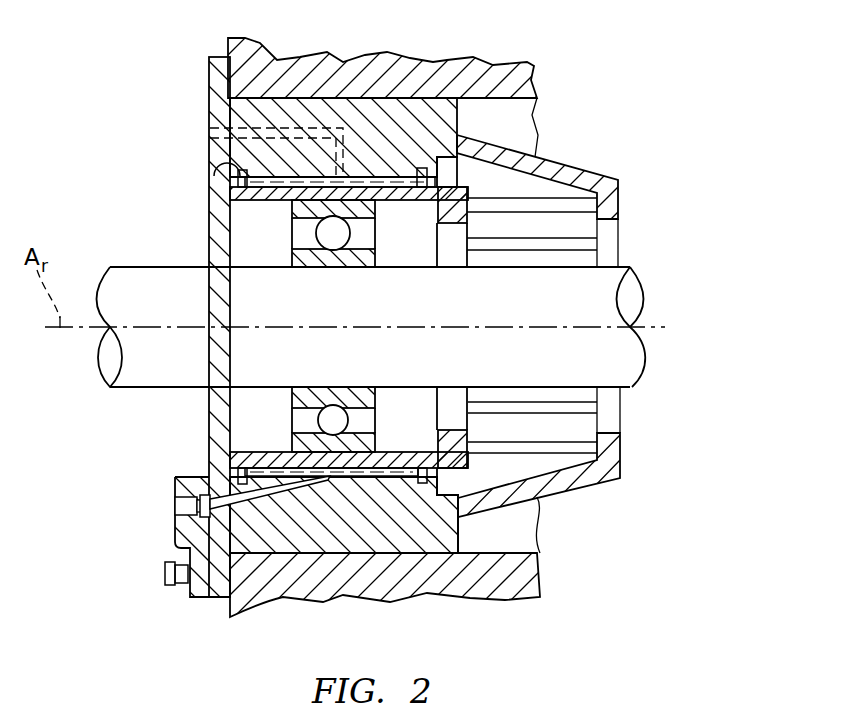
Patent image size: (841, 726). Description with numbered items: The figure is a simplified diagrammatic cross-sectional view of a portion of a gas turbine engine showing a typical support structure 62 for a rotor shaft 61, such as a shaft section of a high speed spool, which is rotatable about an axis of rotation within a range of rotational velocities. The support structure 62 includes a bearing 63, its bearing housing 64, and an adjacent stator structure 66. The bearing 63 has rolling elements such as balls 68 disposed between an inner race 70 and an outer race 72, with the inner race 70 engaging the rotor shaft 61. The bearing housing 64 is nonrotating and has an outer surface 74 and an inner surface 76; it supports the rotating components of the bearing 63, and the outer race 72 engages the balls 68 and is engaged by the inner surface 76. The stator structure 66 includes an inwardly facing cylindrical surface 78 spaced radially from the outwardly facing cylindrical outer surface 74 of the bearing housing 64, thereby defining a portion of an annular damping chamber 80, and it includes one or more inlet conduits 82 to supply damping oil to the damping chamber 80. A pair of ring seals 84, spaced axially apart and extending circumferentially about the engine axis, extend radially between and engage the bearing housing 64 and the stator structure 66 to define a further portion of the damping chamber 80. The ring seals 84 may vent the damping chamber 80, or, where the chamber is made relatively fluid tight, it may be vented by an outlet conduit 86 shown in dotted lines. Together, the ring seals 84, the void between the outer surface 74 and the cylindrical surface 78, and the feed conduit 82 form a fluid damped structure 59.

The fluid damped structure 59 is at (360, 152).
The rotor shaft 61 is at (626, 348).
The support structure 62 is at (181, 86).
The bearing 63 is at (281, 417).
The bearing housing 64 is at (238, 461).
The stator structure 66 is at (252, 540).
The balls 68 is at (335, 415).
The inner race 70 is at (343, 258).
The outer race 72 is at (312, 210).
The outer surface 74 is at (403, 187).
The inner surface 76 is at (250, 452).
The cylindrical surface 78 is at (358, 178).
The damping chamber 80 is at (355, 478).
The inlet conduit 82 is at (295, 478).
The ring seals 84 is at (421, 168).
The outlet conduit 86 is at (275, 128).